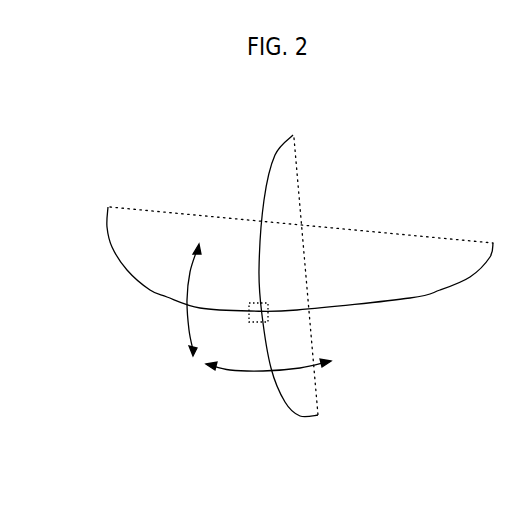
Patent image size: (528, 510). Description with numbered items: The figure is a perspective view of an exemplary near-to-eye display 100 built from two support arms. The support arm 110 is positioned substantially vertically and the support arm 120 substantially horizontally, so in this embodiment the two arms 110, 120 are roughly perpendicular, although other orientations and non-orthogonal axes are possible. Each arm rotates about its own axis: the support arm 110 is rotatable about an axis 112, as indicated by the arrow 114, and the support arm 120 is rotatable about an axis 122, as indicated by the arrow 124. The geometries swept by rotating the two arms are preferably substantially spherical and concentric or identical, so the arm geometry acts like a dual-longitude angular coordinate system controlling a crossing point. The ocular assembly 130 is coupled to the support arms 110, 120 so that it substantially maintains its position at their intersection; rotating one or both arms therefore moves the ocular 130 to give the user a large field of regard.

The NTE display 100 is at (431, 128).
The support arm 110 is at (270, 181).
The axis 112 is at (317, 378).
The arrow 114 is at (213, 367).
The support arm 120 is at (170, 297).
The axis 122 is at (223, 218).
The arrow 124 is at (187, 285).
The ocular assembly 130 is at (265, 303).